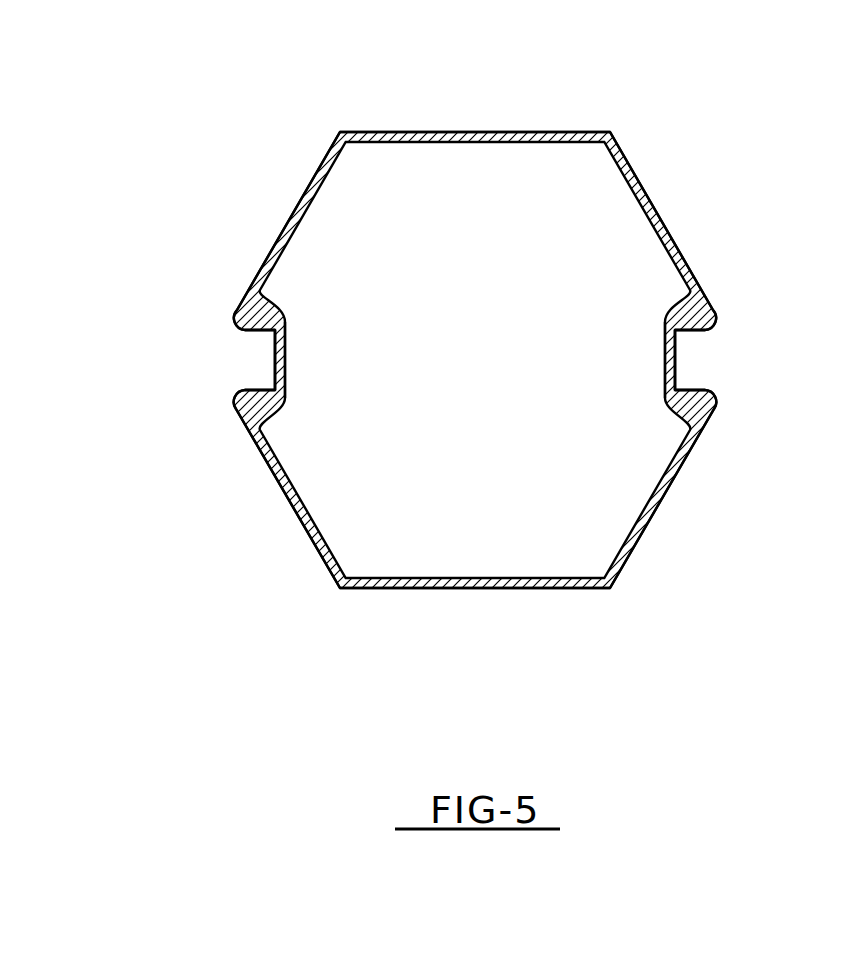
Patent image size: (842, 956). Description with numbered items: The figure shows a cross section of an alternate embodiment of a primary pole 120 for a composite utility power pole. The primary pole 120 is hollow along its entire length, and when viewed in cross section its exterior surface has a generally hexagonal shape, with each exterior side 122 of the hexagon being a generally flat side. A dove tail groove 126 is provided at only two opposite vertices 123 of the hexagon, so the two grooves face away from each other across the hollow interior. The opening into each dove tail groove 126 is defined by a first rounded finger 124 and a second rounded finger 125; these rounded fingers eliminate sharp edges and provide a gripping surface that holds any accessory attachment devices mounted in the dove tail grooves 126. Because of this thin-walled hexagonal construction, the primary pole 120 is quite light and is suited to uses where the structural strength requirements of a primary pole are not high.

The primary pole 120 is at (366, 608).
The exterior side 122 is at (475, 130).
The vertex 123 is at (280, 363).
The first rounded finger 124 is at (232, 326).
The second rounded finger 125 is at (228, 392).
The dove tail groove 126 is at (246, 360).